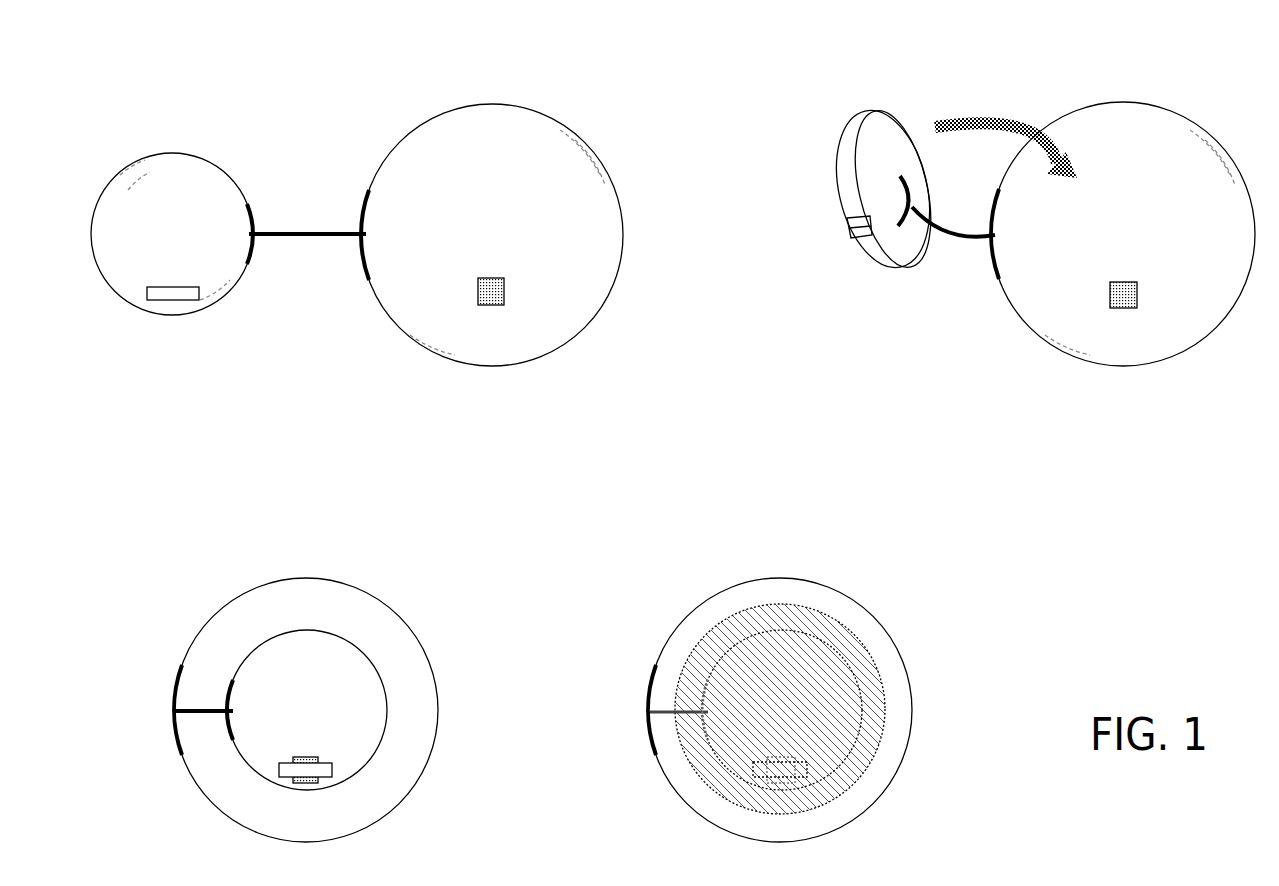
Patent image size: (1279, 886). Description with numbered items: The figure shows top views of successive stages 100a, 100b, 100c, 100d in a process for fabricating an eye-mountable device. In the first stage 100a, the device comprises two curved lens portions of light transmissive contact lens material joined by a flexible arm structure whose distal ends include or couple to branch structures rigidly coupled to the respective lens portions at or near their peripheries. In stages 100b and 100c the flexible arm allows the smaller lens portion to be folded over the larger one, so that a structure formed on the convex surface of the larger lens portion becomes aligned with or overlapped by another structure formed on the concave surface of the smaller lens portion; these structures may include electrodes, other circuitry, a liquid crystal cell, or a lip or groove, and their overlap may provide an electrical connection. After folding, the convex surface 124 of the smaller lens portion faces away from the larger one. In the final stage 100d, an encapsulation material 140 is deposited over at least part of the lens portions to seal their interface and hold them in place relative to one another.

The first processing stage 100a is at (160, 92).
The second processing stage 100b is at (797, 92).
The third processing stage 100c is at (150, 540).
The fourth processing stage 100d is at (625, 540).
The convex surface 124 is at (857, 173).
The encapsulation material 140 is at (887, 728).